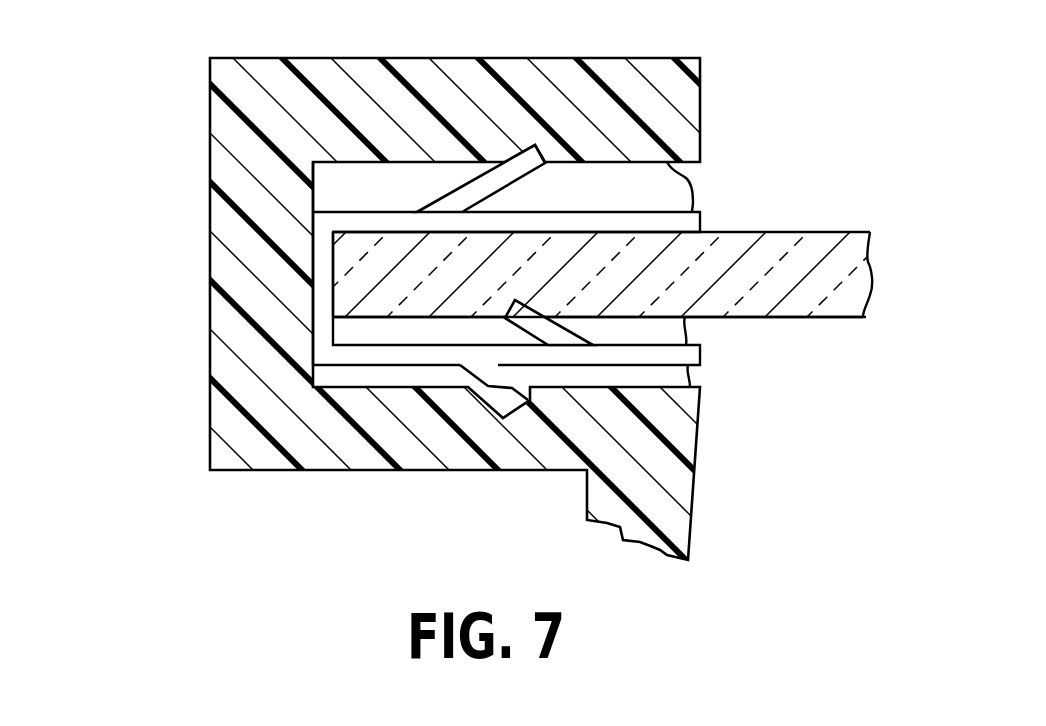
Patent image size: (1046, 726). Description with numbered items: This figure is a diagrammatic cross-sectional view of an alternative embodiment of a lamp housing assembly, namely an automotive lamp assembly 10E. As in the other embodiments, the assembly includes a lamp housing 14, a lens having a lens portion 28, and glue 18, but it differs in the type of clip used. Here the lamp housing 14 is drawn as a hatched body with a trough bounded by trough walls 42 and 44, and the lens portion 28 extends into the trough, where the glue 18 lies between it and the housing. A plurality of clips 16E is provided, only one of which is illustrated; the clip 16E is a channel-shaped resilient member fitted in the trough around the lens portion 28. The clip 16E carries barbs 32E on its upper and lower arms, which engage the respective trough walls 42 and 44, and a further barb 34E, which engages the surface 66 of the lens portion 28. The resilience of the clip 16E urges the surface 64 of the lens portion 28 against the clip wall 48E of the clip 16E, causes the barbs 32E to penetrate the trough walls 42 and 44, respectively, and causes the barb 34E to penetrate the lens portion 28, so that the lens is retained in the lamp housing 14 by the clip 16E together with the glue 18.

The automotive lamp assembly 10E is at (158, 96).
The lamp housing 14 is at (589, 356).
The clip 16E is at (687, 193).
The glue 18 is at (672, 330).
The lens portion 28 is at (536, 282).
The barbs 32E is at (480, 190).
The barb 34E is at (528, 322).
The trough wall 42 is at (697, 180).
The trough wall 44 is at (697, 386).
The clip wall 48E is at (362, 236).
The surface 64 is at (841, 233).
The surface 66 is at (837, 318).